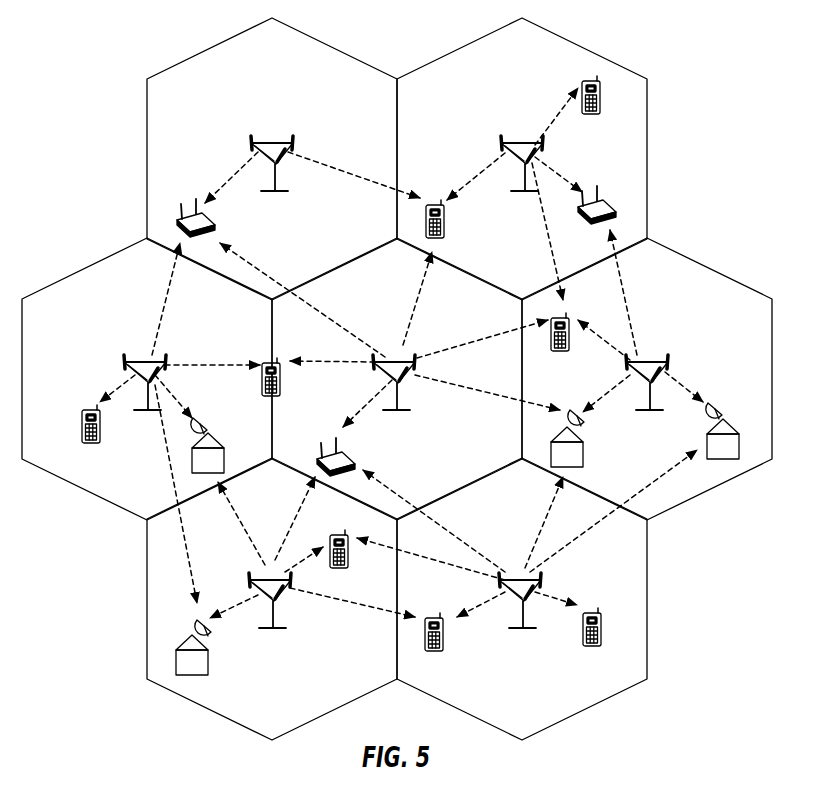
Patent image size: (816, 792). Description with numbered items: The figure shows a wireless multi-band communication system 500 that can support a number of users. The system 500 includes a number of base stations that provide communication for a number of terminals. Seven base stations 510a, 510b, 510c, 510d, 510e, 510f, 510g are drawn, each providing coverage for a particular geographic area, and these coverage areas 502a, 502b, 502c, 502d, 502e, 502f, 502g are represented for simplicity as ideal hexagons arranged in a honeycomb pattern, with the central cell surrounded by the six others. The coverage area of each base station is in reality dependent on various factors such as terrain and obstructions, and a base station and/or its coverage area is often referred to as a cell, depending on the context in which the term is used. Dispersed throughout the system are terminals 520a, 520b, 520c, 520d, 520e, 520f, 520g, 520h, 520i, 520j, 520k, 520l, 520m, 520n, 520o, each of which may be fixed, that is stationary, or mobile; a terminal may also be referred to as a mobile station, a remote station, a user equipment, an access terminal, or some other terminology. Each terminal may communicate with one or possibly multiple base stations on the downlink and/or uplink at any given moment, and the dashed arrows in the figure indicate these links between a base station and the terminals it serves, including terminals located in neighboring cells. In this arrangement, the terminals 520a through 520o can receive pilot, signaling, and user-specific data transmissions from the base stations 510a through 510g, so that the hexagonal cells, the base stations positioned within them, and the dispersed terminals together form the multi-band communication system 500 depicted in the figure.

The wireless multi-band communication system 500 is at (720, 50).
The coverage area 502a is at (208, 50).
The coverage area 502b is at (586, 50).
The coverage area 502c is at (82, 270).
The coverage area 502d is at (417, 276).
The coverage area 502e is at (712, 270).
The coverage area 502f is at (146, 601).
The coverage area 502g is at (648, 601).
The base station 510a is at (277, 126).
The base station 510b is at (527, 126).
The base station 510c is at (144, 358).
The base station 510d is at (397, 344).
The base station 510e is at (660, 346).
The base station 510f is at (265, 577).
The base station 510g is at (528, 566).
The terminal 520a is at (214, 220).
The terminal 520b is at (444, 221).
The terminal 520c is at (592, 116).
The terminal 520d is at (624, 191).
The terminal 520e is at (83, 426).
The terminal 520f is at (228, 427).
The terminal 520g is at (281, 380).
The terminal 520h is at (366, 439).
The terminal 520i is at (563, 349).
The terminal 520j is at (584, 447).
The terminal 520k is at (732, 428).
The terminal 520l is at (340, 535).
The terminal 520m is at (182, 645).
The terminal 520n is at (432, 618).
The terminal 520o is at (596, 613).